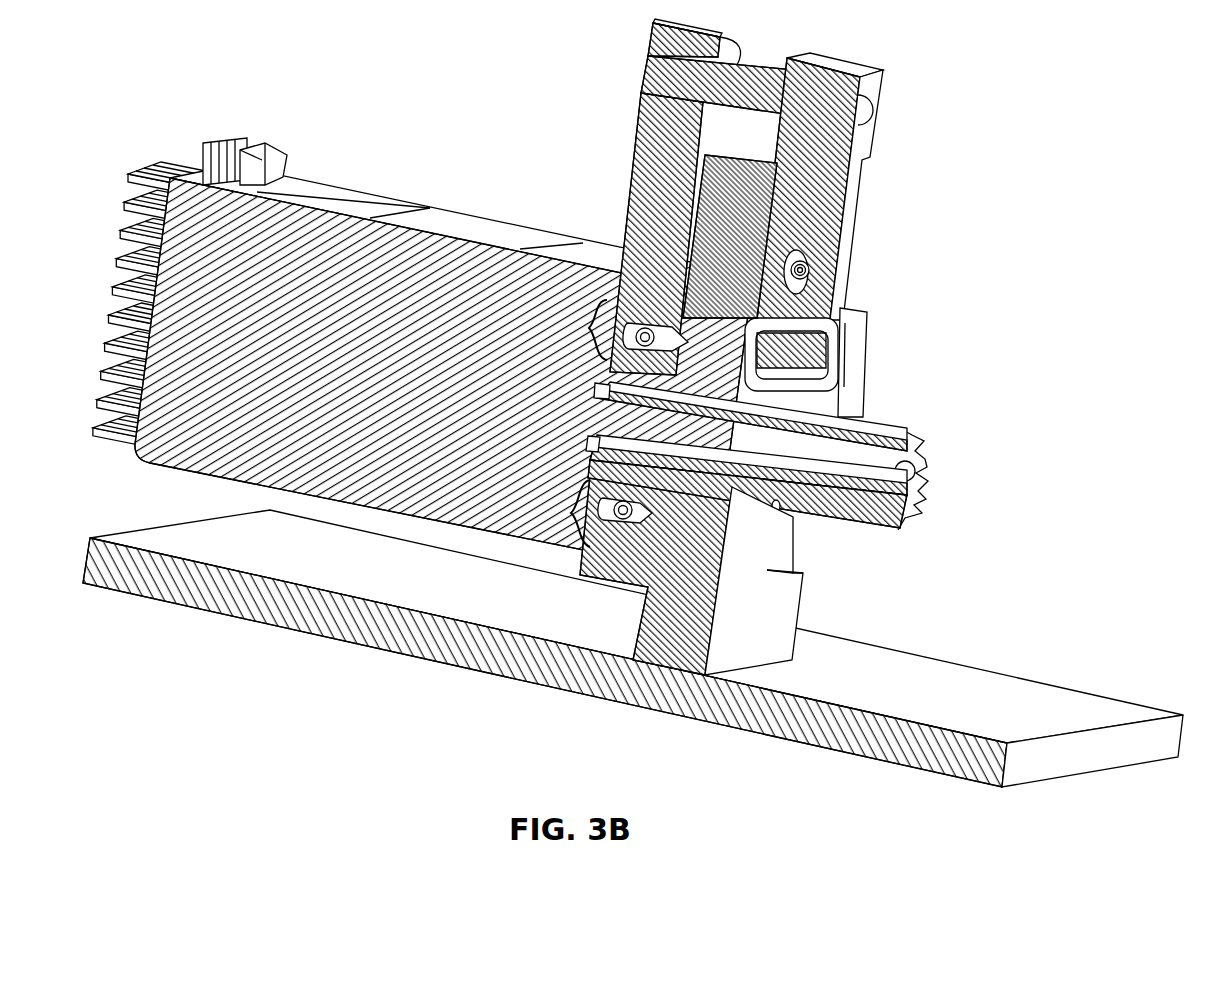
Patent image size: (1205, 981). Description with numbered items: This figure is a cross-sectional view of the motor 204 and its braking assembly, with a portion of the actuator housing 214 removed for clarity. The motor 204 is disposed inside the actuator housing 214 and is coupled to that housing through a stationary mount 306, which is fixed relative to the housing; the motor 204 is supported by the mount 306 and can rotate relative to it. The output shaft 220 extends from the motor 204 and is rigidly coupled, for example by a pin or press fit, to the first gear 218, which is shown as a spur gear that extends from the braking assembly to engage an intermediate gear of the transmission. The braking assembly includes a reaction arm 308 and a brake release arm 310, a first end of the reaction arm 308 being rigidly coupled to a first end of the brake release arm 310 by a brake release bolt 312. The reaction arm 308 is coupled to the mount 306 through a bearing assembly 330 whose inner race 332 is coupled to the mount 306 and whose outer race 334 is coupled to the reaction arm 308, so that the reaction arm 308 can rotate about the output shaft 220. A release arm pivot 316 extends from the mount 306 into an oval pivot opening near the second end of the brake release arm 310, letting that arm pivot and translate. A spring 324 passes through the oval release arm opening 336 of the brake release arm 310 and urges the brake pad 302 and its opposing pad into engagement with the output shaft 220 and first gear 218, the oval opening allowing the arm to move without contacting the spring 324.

The motor 204 is at (262, 122).
The actuator housing 214 is at (186, 600).
The first gear 218 is at (920, 468).
The output shaft 220 is at (697, 440).
The brake pad 302 is at (866, 385).
The stationary mount 306 is at (728, 213).
The reaction arm 308 is at (667, 31).
The brake release arm 310 is at (840, 64).
The brake release bolt 312 is at (752, 84).
The release arm pivot 316 is at (815, 372).
The spring 324 is at (810, 268).
The bearing assembly 330 is at (583, 328).
The inner race 332 is at (630, 330).
The outer race 334 is at (655, 330).
The release arm opening 336 is at (815, 292).